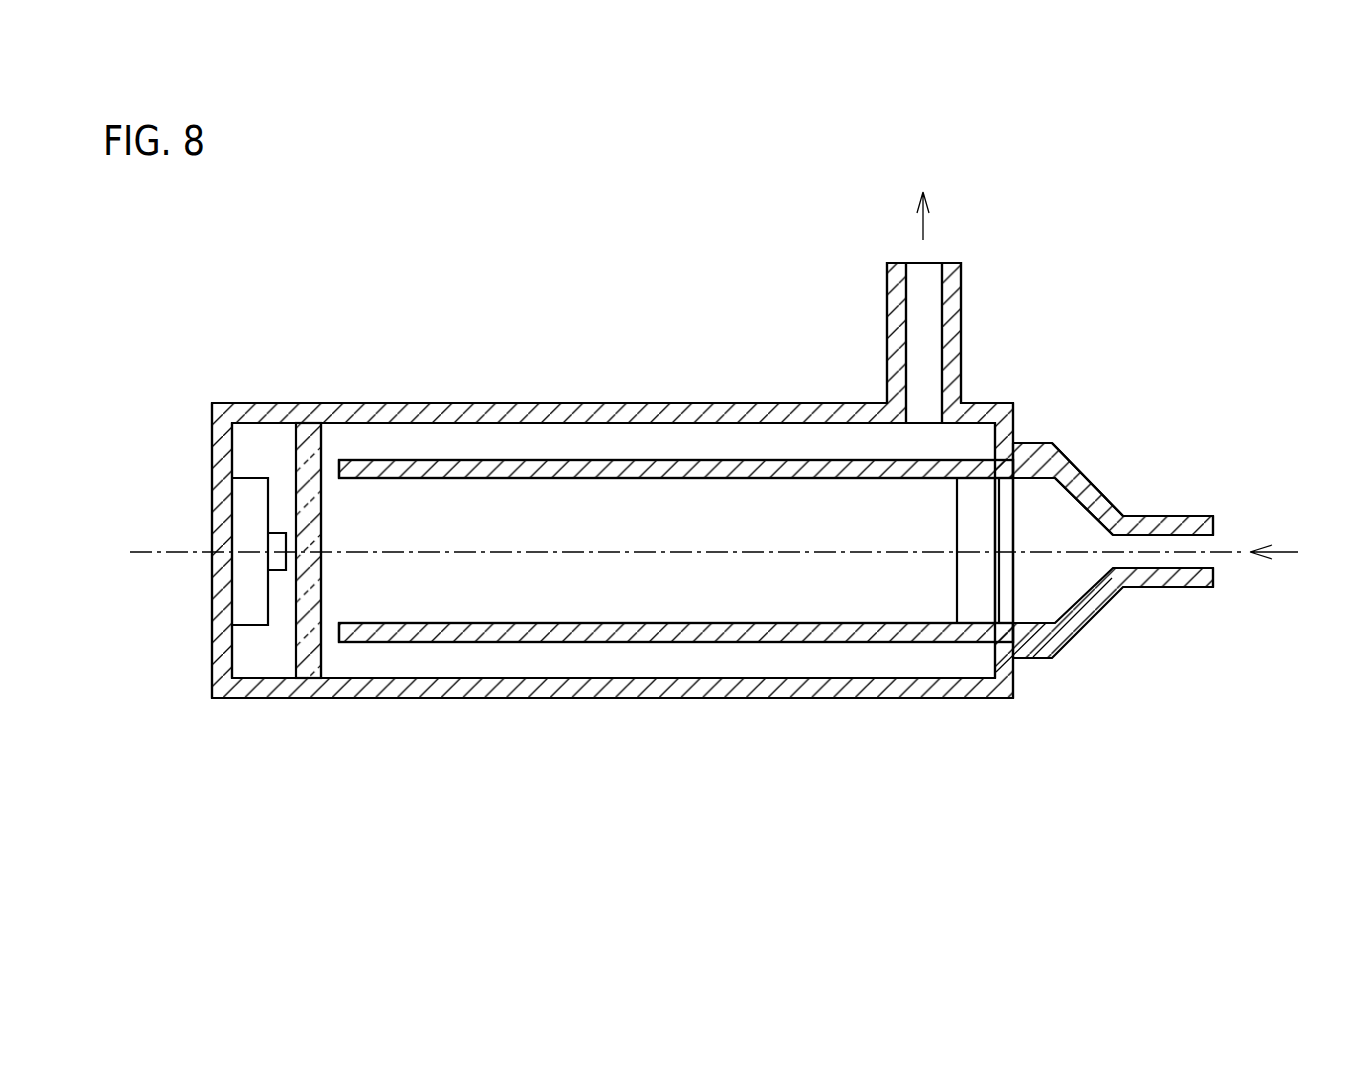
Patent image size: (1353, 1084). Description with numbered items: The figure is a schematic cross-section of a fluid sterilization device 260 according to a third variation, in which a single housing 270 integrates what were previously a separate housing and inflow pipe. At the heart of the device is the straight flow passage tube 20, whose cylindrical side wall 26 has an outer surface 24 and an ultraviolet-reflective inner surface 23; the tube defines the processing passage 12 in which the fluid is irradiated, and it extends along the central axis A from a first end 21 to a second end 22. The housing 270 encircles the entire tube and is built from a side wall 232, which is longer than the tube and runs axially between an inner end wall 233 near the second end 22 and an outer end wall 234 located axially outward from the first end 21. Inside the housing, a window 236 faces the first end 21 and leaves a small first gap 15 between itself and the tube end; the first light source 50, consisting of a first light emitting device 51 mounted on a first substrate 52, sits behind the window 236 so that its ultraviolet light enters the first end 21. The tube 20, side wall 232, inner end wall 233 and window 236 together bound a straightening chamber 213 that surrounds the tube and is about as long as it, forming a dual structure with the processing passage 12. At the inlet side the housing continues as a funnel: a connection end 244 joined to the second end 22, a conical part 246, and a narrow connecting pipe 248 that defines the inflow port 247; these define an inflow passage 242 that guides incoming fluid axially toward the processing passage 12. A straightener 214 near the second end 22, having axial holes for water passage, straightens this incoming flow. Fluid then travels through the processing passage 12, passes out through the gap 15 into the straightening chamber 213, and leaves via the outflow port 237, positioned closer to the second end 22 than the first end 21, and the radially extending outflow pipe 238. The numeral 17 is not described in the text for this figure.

The fluid sterilization device 260 is at (708, 872).
The housing 270 is at (282, 403).
The side wall 232 is at (685, 418).
The outer end wall 234 is at (220, 658).
The inner end wall 233 is at (1008, 687).
The outflow pipe 238 is at (952, 303).
The outflow port 237 is at (945, 409).
The flow passage tube 20 is at (480, 456).
The side wall 26 is at (553, 468).
The outer surface 24 is at (800, 640).
The first end 21 is at (350, 632).
The straightening chamber 213 is at (502, 660).
The processing passage 12 is at (600, 605).
The inner surface 23 is at (840, 622).
The straightener 214 is at (972, 610).
The second end 22 is at (1003, 640).
The window 236 is at (310, 673).
The first gap 15 is at (332, 441).
The rear chamber 17 is at (267, 667).
The first light source 50 is at (196, 535).
The first substrate 52 is at (252, 505).
The first light emitting device 51 is at (275, 545).
The connection end 244 is at (1052, 442).
The conical part 246 is at (1093, 498).
The inflow passage 242 is at (1067, 600).
The connecting pipe 248 is at (1168, 578).
The inflow port 247 is at (1212, 557).
The central axis A is at (770, 548).